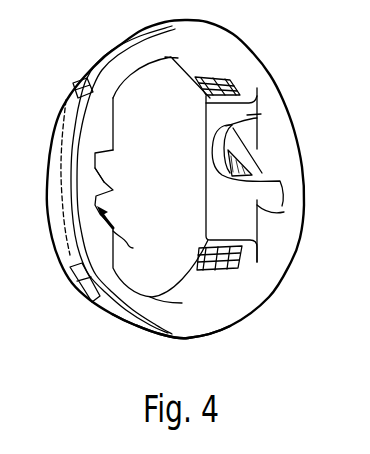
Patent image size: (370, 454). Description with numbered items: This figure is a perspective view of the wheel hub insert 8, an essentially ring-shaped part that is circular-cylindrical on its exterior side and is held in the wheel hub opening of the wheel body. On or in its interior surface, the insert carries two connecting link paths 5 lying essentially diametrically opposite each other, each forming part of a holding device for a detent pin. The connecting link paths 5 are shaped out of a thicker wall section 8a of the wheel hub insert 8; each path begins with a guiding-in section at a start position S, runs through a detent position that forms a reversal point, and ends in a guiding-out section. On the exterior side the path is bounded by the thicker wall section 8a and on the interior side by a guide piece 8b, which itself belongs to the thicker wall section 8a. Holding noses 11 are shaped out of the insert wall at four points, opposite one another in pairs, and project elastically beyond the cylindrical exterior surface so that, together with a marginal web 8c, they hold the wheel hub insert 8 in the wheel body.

The wheel hub insert 8 is at (42, 200).
The thicker wall section 8a is at (272, 84).
The guide piece 8b is at (108, 182).
The marginal web 8c is at (153, 341).
The connecting link path 5 is at (133, 248).
The start position S is at (238, 130).
The holding noses 11 is at (73, 89).